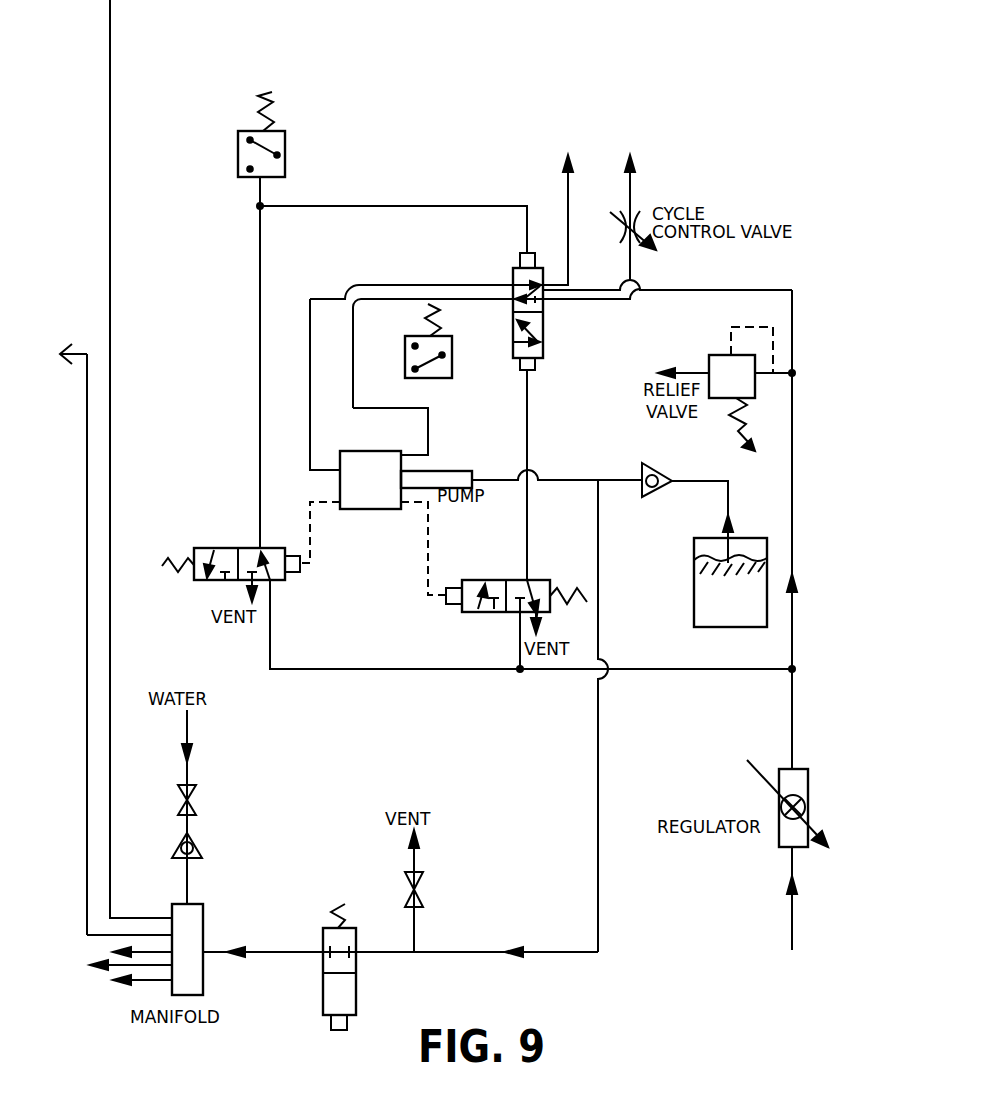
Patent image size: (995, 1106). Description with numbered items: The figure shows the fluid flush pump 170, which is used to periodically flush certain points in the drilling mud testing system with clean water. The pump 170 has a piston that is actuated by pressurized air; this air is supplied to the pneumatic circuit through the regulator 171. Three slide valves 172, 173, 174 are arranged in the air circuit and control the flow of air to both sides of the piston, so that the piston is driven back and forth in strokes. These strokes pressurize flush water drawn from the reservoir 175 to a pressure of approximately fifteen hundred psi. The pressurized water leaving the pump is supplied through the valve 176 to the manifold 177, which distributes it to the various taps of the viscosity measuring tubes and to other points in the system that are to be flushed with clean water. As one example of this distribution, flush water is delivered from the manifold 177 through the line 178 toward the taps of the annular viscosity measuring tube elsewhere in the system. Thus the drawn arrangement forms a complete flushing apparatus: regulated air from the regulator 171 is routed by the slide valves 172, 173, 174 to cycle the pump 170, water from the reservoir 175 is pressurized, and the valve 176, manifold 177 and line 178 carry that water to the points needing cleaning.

The fluid flush pump 170 is at (440, 470).
The regulator 171 is at (779, 841).
The slide valve 172 is at (505, 580).
The slide valve 173 is at (543, 334).
The slide valve 174 is at (272, 582).
The reservoir 175 is at (694, 598).
The valve 176 is at (323, 935).
The manifold 177 is at (203, 968).
The line 178 is at (110, 776).